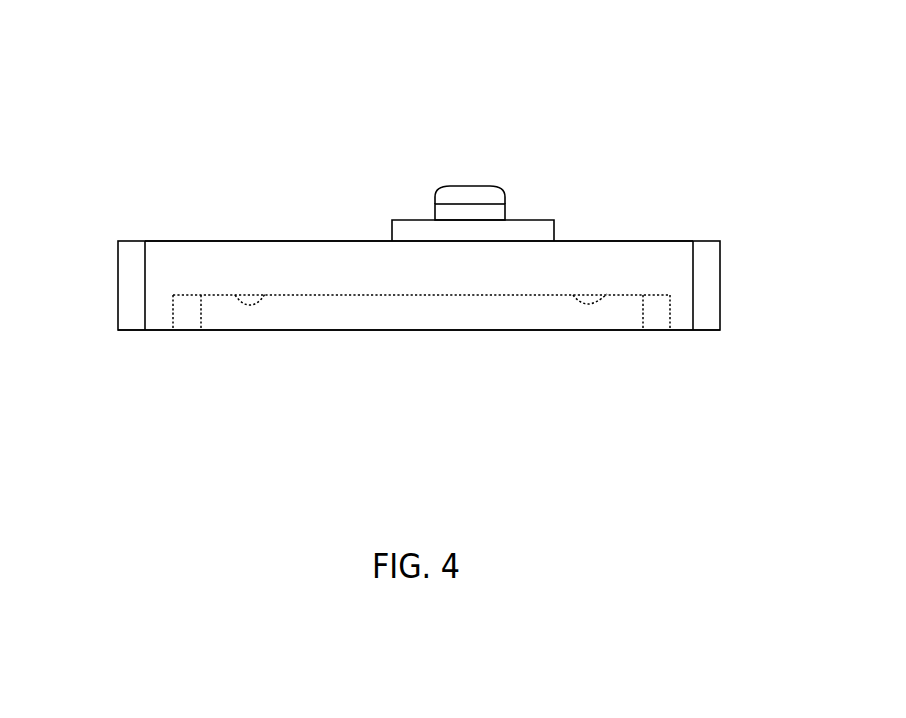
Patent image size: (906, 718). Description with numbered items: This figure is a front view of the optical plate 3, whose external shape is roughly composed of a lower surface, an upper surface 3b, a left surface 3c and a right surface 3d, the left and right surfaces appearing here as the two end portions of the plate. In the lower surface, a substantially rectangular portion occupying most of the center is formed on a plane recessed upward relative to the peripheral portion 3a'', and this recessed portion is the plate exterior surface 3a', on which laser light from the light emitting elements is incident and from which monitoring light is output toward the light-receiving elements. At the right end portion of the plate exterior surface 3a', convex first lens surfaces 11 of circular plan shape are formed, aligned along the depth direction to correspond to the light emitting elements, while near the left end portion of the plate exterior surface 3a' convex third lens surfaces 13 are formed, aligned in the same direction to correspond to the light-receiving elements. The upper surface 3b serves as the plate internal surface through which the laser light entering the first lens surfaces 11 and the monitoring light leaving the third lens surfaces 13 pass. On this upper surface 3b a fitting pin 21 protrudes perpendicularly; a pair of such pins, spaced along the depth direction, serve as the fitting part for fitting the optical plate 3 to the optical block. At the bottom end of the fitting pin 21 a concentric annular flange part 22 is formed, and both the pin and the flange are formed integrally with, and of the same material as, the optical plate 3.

The optical plate 3 is at (184, 127).
The plate exterior surface 3a' is at (421, 342).
The peripheral portion 3a'' is at (415, 369).
The upper surface 3b is at (602, 240).
The left surface 3c is at (118, 293).
The right surface 3d is at (720, 298).
The first lens surface 11 is at (588, 304).
The third lens surface 13 is at (250, 305).
The fitting pin 21 is at (468, 186).
The flange part 22 is at (403, 220).